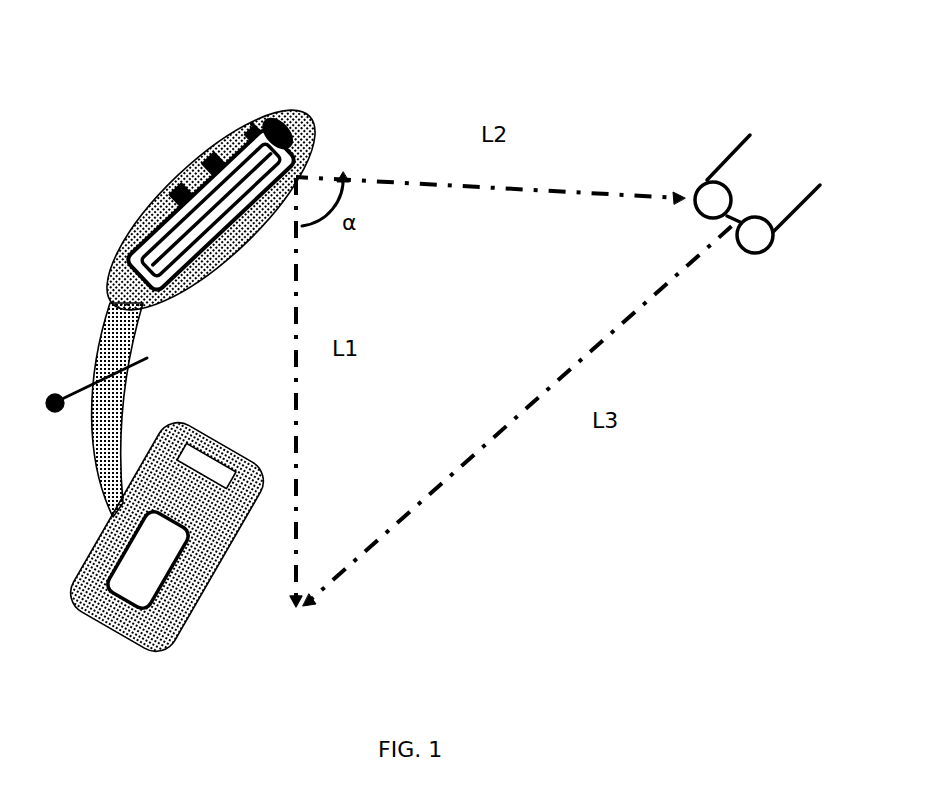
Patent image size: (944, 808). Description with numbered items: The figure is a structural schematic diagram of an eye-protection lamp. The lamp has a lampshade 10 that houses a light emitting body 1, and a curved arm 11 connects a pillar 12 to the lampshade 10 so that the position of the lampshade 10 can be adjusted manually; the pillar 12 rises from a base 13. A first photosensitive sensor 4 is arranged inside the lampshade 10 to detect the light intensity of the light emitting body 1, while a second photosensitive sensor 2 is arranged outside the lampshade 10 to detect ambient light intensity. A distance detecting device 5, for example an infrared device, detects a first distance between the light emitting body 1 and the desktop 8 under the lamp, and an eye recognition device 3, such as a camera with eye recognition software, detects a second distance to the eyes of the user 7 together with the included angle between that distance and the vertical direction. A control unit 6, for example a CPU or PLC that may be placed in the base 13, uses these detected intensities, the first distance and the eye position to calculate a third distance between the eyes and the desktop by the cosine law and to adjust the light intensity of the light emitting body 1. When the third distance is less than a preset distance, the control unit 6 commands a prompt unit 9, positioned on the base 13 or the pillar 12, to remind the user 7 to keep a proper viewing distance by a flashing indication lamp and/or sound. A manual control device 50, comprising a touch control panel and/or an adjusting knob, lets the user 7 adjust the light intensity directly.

The light emitting body 1 is at (170, 237).
The second photosensitive sensor 2 is at (173, 187).
The eye recognition device 3 is at (212, 158).
The first photosensitive sensor 4 is at (273, 130).
The distance detecting device 5 is at (295, 105).
The control unit 6 is at (140, 580).
The user 7 is at (697, 172).
The desktop 8 is at (305, 615).
The prompt unit 9 is at (105, 368).
The lampshade 10 is at (250, 125).
The curved arm 11 is at (115, 250).
The pillar 12 is at (100, 377).
The base 13 is at (92, 547).
The manual control device 50 is at (223, 490).